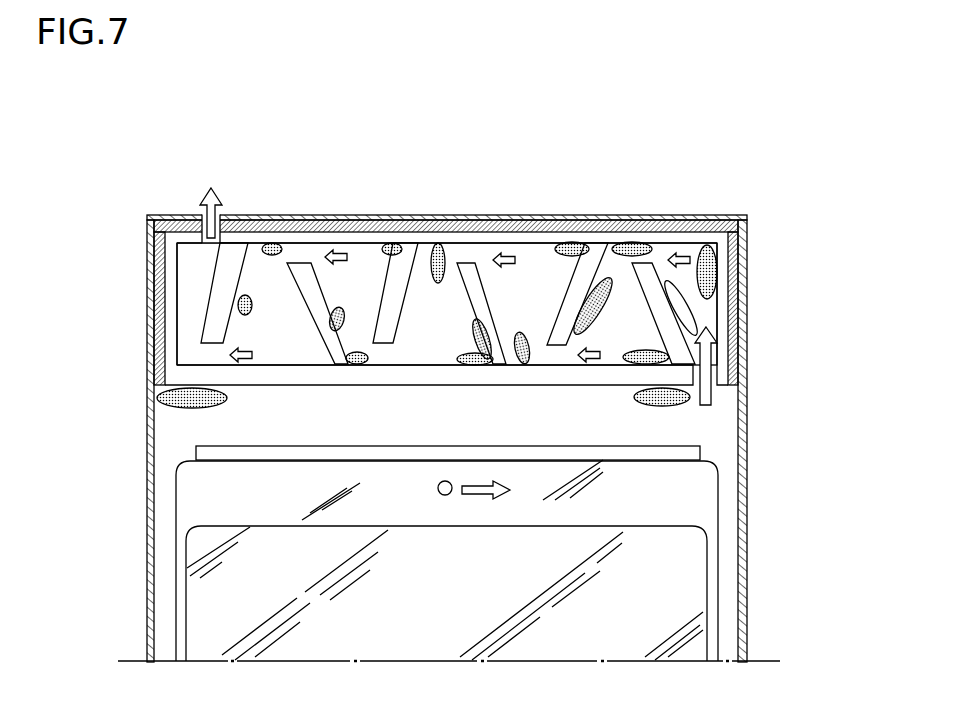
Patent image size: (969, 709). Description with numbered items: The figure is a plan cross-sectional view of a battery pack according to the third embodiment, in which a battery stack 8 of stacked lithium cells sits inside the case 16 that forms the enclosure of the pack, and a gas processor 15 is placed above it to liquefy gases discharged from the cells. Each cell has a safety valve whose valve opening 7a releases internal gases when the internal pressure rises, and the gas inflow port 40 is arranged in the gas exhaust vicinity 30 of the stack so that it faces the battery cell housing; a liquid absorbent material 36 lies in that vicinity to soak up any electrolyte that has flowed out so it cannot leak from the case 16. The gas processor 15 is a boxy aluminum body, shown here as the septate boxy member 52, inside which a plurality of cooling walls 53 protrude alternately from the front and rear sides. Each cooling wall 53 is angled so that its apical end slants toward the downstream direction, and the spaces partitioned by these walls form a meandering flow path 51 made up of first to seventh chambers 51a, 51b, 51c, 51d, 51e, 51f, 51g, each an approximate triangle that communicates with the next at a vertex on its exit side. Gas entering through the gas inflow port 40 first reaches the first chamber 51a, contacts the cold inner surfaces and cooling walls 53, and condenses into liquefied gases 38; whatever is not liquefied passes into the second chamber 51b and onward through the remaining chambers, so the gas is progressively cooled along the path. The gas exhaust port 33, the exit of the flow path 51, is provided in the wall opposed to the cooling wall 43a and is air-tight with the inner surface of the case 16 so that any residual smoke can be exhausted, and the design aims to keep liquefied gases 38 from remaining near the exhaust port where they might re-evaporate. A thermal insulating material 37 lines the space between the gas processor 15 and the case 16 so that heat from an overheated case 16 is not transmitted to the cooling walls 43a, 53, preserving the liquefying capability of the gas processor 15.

The valve opening 7a is at (438, 496).
The battery stack 8 is at (678, 563).
The gas processor 15 is at (733, 278).
The case 16 is at (746, 473).
The gas exhaust vicinity 30 is at (410, 460).
The gas exhaust port 33 is at (202, 214).
The liquid absorbent material 36 is at (373, 452).
The thermal insulating material 37 is at (153, 333).
The liquefied gases 38 is at (238, 301).
The gas inflow port 40 is at (717, 387).
The cooling wall 43a is at (193, 373).
The flow path 51 is at (618, 305).
The first chamber 51a is at (685, 248).
The second chamber 51b is at (620, 332).
The third chamber 51c is at (540, 303).
The fourth chamber 51d is at (442, 307).
The fifth chamber 51e is at (358, 300).
The sixth chamber 51f is at (280, 347).
The seventh chamber 51g is at (217, 260).
The septate boxy member 52 is at (173, 262).
The cooling walls 53 is at (252, 258).